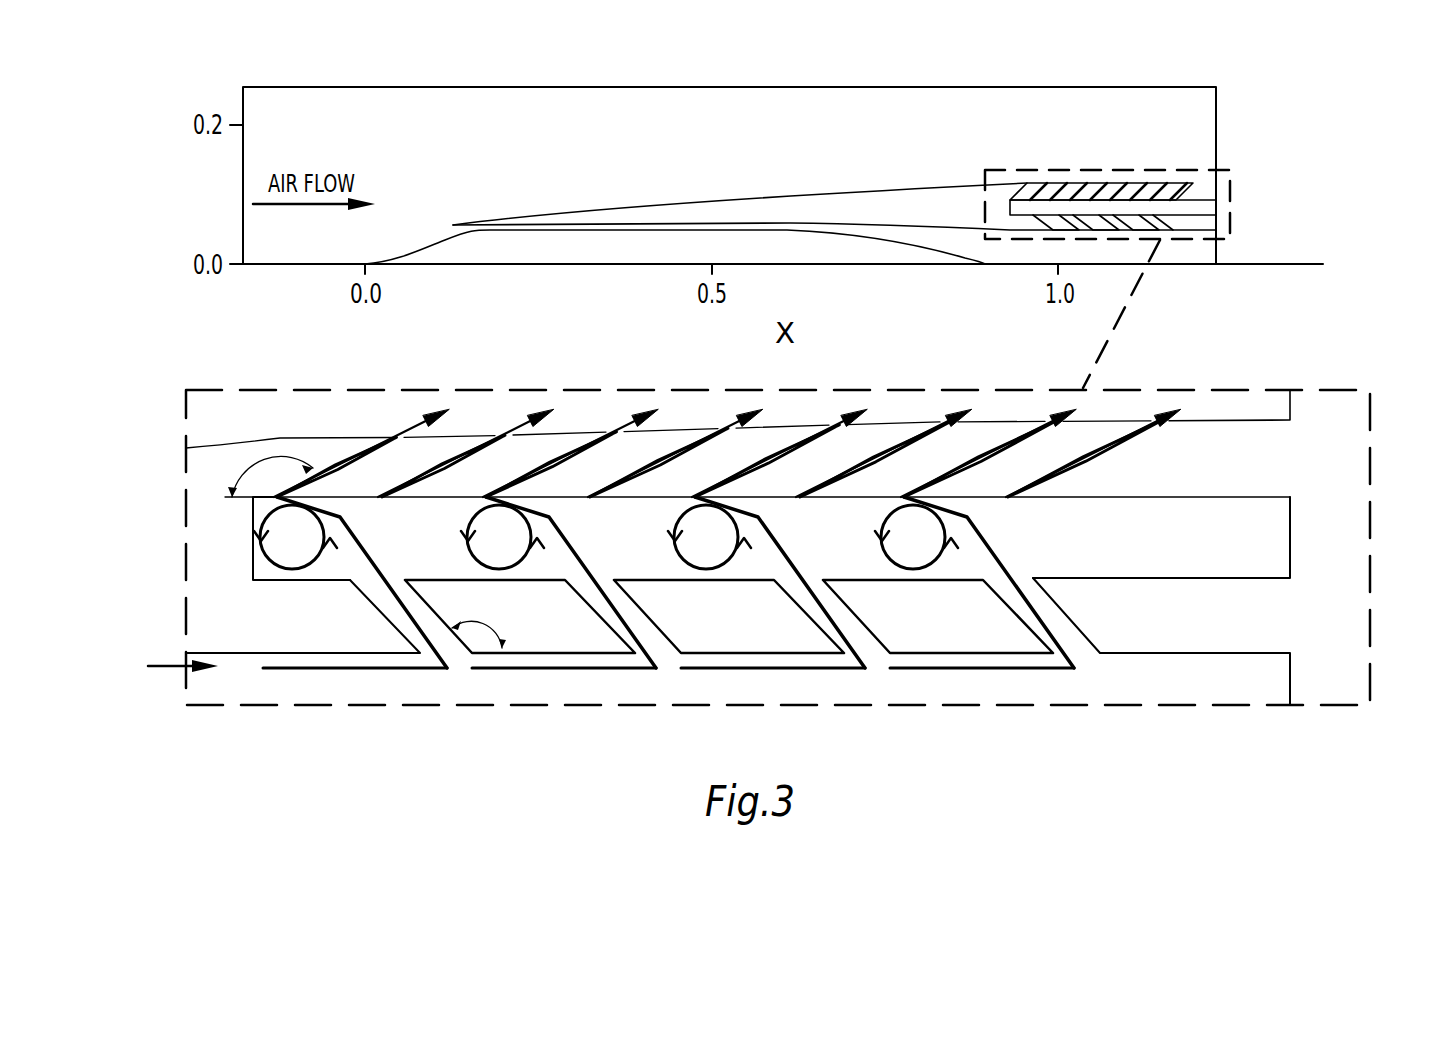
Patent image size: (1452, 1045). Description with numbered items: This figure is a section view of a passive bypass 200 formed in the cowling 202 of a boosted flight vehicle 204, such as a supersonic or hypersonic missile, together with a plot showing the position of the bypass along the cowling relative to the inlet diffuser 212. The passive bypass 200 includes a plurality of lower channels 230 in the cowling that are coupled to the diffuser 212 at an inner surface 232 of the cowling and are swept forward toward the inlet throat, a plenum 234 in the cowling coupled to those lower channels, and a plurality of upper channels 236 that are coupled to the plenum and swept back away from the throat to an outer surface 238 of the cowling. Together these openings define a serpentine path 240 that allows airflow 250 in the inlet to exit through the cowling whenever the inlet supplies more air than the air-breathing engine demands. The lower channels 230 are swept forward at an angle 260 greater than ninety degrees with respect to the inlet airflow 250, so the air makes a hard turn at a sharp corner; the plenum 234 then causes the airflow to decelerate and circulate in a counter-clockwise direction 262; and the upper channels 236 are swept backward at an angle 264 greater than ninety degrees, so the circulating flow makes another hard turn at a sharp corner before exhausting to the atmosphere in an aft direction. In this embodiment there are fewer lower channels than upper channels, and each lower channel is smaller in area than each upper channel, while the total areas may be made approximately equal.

The passive bypass 200 is at (1109, 170).
The cowling 202 is at (925, 210).
The boosted flight vehicle 204 is at (681, 250).
The diffuser 212 is at (1170, 675).
The lower channels 230 is at (642, 612).
The inner surface 232 is at (1222, 628).
The plenum 234 is at (1285, 538).
The upper channels 236 is at (1100, 455).
The outer surface 238 is at (1242, 395).
The serpentine path 240 is at (352, 584).
The airflow 250 is at (417, 423).
The angle 260 is at (488, 624).
The counter-clockwise direction 262 is at (262, 522).
The angle 264 is at (263, 455).